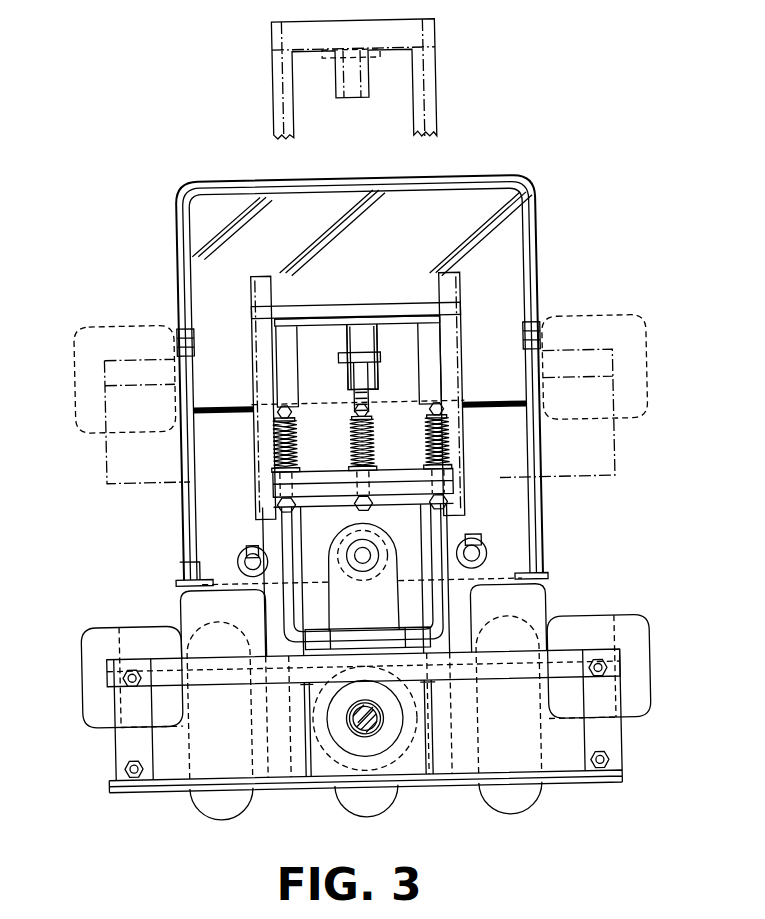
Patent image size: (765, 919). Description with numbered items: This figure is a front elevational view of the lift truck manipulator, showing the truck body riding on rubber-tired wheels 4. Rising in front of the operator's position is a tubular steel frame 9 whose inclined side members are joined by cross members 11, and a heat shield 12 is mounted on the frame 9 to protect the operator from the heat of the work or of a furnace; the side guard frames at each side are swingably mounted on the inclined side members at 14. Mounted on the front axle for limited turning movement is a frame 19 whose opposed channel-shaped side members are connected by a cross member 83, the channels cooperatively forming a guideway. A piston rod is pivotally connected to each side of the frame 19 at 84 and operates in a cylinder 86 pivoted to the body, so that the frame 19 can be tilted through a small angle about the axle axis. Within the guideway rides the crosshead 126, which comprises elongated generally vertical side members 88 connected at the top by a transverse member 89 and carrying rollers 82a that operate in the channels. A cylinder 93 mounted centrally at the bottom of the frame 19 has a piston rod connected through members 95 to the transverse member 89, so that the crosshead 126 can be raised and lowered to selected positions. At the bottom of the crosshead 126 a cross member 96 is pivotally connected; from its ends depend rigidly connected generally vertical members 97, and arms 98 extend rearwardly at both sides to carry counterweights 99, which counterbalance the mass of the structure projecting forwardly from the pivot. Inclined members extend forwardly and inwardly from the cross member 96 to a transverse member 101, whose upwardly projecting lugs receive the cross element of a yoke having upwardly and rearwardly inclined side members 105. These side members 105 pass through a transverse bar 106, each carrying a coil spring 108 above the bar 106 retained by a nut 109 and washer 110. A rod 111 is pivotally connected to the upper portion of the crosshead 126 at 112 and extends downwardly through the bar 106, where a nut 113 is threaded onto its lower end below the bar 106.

The wheels 4 is at (198, 804).
The tubular steel frame 9 is at (186, 524).
The cross members 11 is at (486, 180).
The heat shield 12 is at (210, 266).
The swing mounting 14 is at (193, 336).
The frame 19 is at (257, 362).
The rollers 82a is at (245, 611).
The cross member 83 is at (416, 303).
The pivotal connection 84 is at (264, 548).
The cylinder 86 is at (257, 580).
The side members 88 is at (282, 381).
The transverse member 89 is at (322, 336).
The cylinder 93 is at (383, 420).
The members 95 is at (347, 388).
The cross member 96 is at (548, 784).
The vertical members 97 is at (120, 738).
The arms 98 is at (129, 664).
The counterweights 99 is at (78, 686).
The transverse member 101 is at (339, 536).
The side members 105 is at (282, 566).
The bar 106 is at (340, 478).
The coil spring 108 is at (271, 457).
The nut 109 is at (272, 426).
The washer 110 is at (270, 438).
The rod 111 is at (369, 408).
The pivotal connection 112 is at (381, 356).
The nut 113 is at (275, 504).
The crosshead 126 is at (446, 90).